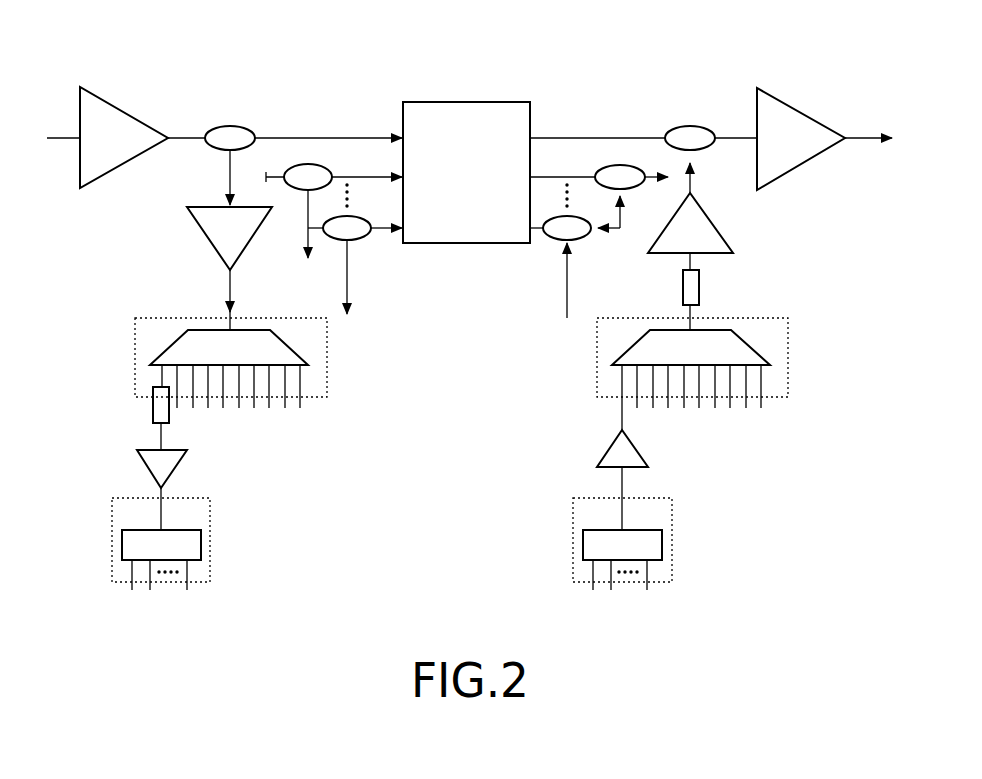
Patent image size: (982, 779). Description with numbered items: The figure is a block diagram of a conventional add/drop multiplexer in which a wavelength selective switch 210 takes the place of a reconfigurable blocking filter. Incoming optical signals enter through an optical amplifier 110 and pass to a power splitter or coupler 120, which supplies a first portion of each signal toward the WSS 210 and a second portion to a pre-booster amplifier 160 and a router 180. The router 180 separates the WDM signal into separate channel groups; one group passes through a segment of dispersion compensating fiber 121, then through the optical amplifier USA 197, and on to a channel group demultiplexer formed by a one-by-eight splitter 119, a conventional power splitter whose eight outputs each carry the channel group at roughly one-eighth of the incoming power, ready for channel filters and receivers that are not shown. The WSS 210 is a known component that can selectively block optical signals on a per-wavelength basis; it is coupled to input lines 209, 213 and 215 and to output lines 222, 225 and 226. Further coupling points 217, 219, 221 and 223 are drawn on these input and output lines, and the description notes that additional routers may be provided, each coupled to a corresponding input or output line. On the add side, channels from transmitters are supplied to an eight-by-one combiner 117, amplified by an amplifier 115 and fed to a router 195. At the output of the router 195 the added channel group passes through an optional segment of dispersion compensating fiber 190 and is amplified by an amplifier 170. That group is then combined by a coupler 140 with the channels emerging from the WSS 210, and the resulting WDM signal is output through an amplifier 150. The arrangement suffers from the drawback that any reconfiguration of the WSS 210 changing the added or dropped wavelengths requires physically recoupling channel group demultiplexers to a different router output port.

The optical amplifier 110 is at (112, 104).
The power splitter or coupler 120 is at (205, 128).
The pre-booster amplifier 160 is at (205, 240).
The router 180 is at (140, 344).
The dispersion compensating fiber 121 is at (170, 418).
The optical amplifier USA 197 is at (147, 471).
The 1×8 splitter 119 is at (212, 538).
The input line 209 is at (365, 136).
The input line 213 is at (268, 175).
The tap coupler 217 is at (308, 164).
The input line 215 is at (318, 236).
The tap coupler 219 is at (372, 237).
The wavelength selective switch 210 is at (477, 102).
The output line 225 is at (540, 176).
The tap coupler 223 is at (608, 165).
The output line 226 is at (640, 137).
The coupler 140 is at (715, 130).
The amplifier 150 is at (790, 108).
The amplifier 170 is at (710, 220).
The dispersion compensating fiber 190 is at (700, 305).
The router 195 is at (788, 360).
The amplifier 115 is at (637, 452).
The 8×1 combiner 117 is at (672, 540).
The tap coupler 221 is at (547, 240).
The output line 222 is at (598, 229).